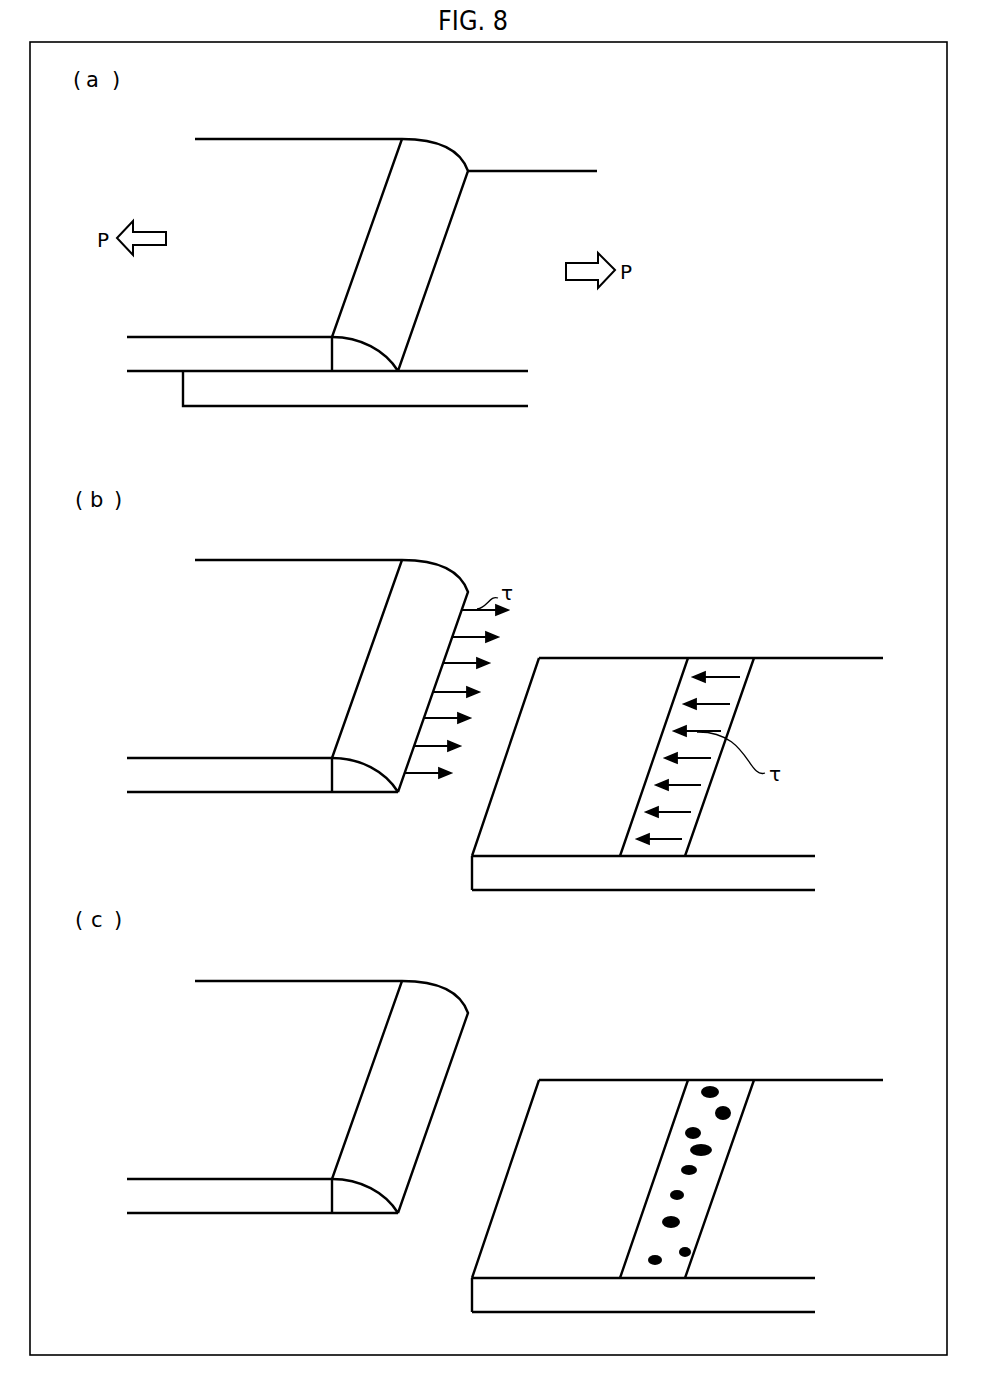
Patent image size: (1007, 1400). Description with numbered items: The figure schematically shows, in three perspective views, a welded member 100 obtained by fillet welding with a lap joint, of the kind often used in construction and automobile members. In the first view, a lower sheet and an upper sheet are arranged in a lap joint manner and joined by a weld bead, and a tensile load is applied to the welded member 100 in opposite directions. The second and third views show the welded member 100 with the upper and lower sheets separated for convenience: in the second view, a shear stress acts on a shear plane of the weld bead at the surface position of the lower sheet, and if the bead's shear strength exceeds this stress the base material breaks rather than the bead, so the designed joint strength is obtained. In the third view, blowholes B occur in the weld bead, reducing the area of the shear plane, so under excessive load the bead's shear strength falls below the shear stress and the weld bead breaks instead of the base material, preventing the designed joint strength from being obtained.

The welded member 100 is at (397, 241).
The blowholes B is at (731, 1114).